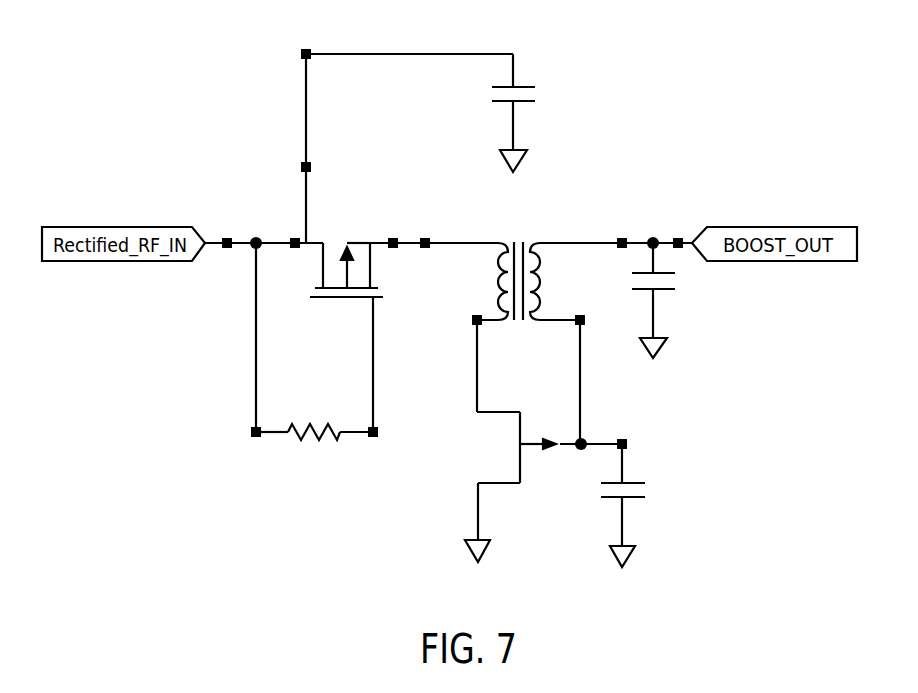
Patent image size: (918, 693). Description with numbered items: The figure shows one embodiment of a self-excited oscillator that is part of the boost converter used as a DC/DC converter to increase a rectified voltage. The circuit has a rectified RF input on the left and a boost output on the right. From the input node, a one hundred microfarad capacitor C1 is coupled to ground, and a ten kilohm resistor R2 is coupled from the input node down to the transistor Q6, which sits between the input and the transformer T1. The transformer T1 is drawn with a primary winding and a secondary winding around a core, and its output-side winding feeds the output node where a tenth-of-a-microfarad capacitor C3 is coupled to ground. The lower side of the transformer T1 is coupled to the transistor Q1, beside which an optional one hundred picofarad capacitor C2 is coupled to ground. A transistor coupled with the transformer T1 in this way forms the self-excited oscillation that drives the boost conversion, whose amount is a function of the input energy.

The capacitor C1 is at (492, 113).
The transistor Q6 is at (346, 337).
The resistor R2 is at (314, 435).
The transformer T1 is at (528, 282).
The capacitor C3 is at (670, 300).
The transistor Q1 is at (510, 487).
The optional capacitor C2 is at (644, 505).